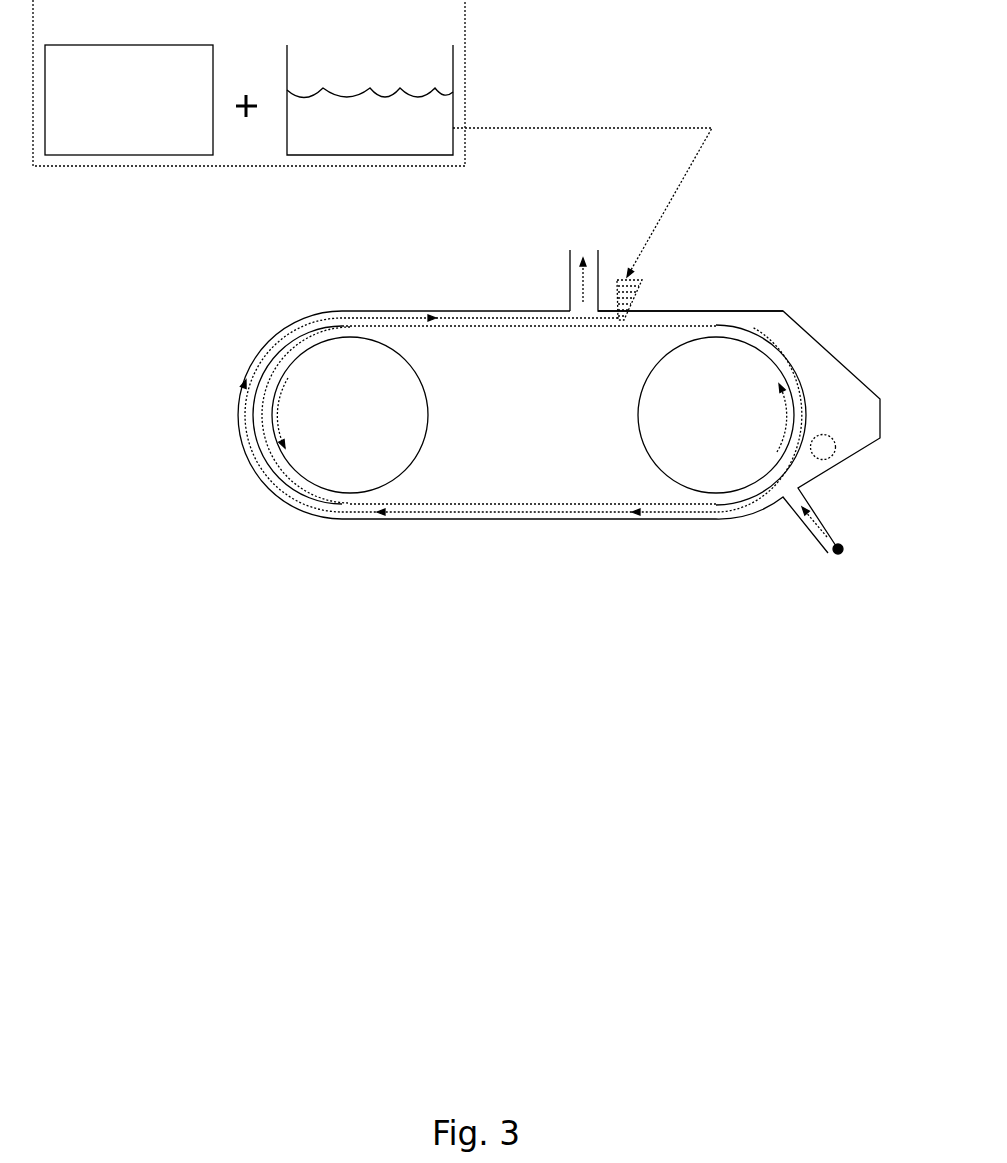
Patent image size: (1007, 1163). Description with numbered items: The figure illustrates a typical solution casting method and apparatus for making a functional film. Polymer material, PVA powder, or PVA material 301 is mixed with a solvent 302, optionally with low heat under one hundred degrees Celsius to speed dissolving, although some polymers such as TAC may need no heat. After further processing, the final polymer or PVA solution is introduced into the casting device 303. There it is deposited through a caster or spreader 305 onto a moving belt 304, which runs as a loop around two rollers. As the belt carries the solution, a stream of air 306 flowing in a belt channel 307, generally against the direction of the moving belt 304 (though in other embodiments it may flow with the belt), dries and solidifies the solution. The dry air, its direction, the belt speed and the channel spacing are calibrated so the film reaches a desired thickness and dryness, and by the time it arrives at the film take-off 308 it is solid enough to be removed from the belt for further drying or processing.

The polymer or PVA material 301 is at (129, 78).
The solvent 302 is at (369, 78).
The casting device 303 is at (559, 417).
The moving belt 304 is at (730, 320).
The caster or spreader 305 is at (640, 292).
The stream of air 306 is at (411, 307).
The belt channel 307 is at (475, 303).
The film take-off 308 is at (841, 436).